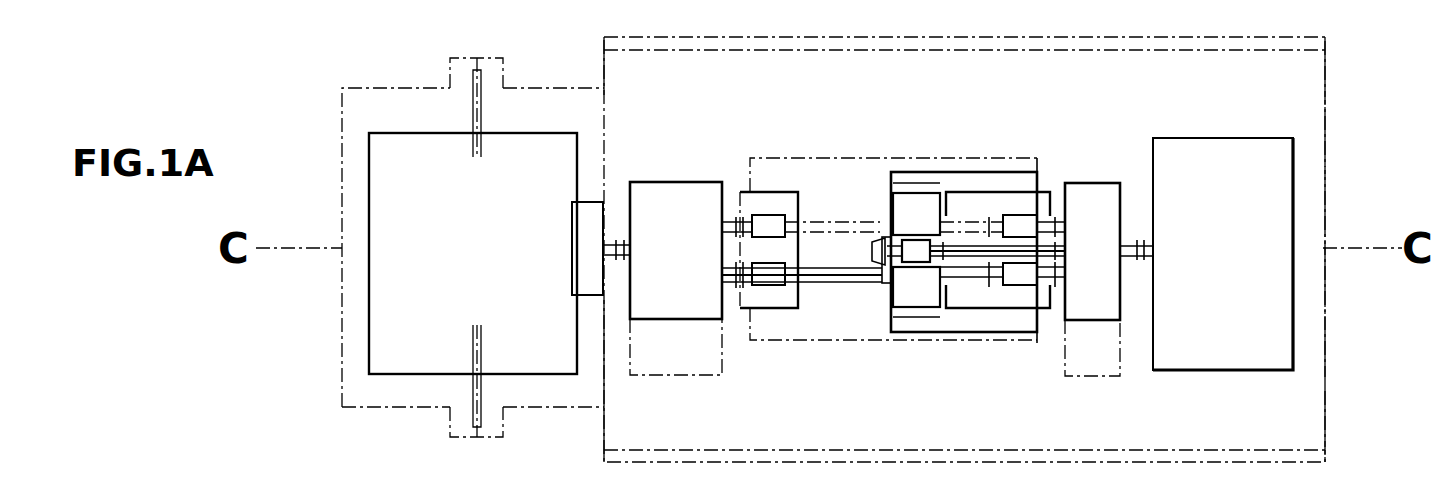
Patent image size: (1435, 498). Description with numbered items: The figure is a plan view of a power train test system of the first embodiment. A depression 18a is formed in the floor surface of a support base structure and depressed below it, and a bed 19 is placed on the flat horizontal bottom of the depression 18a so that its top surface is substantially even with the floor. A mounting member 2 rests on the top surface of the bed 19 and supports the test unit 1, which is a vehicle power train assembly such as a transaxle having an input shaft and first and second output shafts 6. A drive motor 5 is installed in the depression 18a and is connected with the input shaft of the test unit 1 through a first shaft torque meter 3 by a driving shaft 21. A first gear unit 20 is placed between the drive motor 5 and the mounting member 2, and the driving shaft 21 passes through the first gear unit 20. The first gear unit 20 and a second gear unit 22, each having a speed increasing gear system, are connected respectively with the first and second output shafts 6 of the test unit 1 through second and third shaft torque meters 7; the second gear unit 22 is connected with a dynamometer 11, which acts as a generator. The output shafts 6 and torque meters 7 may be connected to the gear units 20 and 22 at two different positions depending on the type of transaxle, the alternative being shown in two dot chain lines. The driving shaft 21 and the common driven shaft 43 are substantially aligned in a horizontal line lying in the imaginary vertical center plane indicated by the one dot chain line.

The test unit 1 is at (878, 283).
The mounting member 2 is at (906, 200).
The first shaft torque meter 3 is at (918, 243).
The drive motor 5 is at (1228, 138).
The output shafts 6 is at (822, 222).
The shaft torque meters 7 is at (778, 215).
The dynamometer 11 is at (408, 355).
The depression 18a is at (1298, 39).
The bed 19 is at (997, 160).
The first gear unit 20 is at (1090, 183).
The driving shaft 21 is at (1130, 243).
The second gear unit 22 is at (668, 182).
The common driven shaft 43 is at (625, 257).